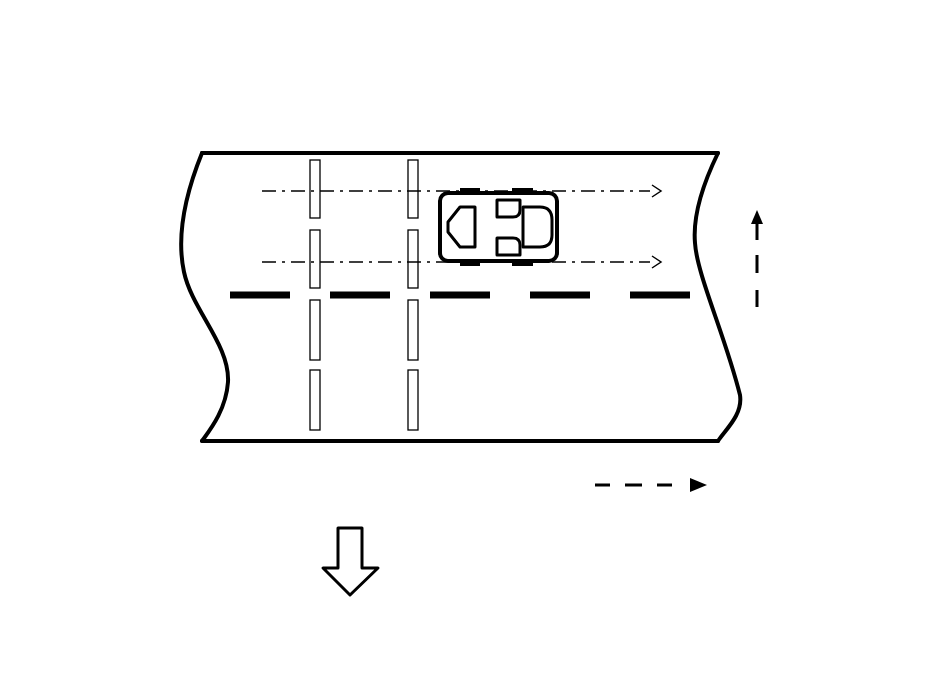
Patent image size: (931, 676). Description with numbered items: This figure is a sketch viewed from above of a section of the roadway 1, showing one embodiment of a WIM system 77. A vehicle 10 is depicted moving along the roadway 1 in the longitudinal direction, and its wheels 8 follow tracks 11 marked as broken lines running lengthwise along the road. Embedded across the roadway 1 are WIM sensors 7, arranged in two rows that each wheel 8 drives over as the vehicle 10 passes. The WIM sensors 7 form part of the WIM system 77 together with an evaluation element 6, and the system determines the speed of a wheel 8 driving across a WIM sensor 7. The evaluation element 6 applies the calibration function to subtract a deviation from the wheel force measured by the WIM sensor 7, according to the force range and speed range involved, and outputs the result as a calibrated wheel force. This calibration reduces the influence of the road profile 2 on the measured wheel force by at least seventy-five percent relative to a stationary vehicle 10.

The roadway 1 is at (205, 139).
The road profile 2 is at (503, 416).
The evaluation element 6 is at (358, 307).
The WIM sensor 7 is at (313, 181).
The wheel 8 is at (464, 192).
The vehicle 10 is at (463, 206).
The track of wheel 11 is at (578, 263).
The WIM system 77 is at (358, 307).